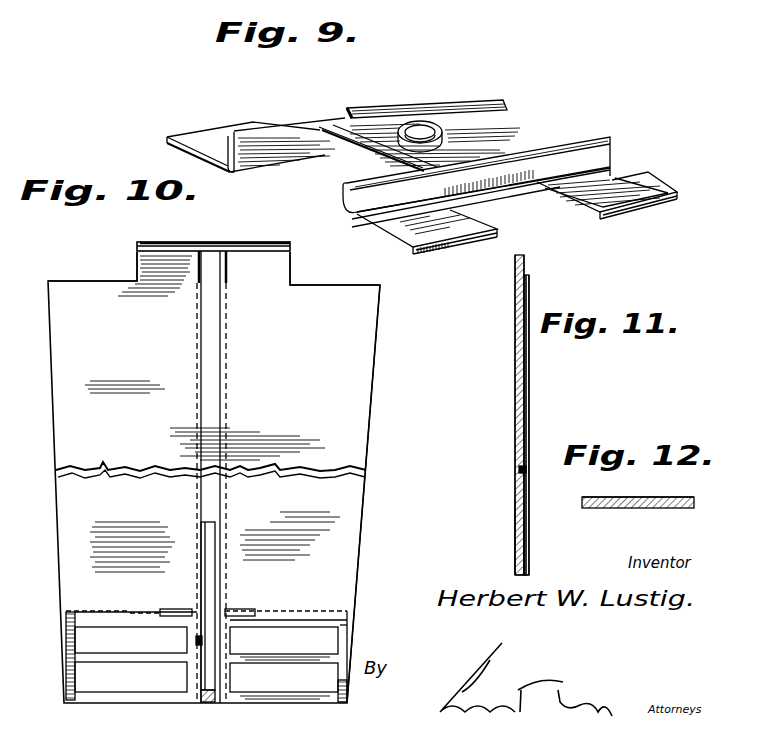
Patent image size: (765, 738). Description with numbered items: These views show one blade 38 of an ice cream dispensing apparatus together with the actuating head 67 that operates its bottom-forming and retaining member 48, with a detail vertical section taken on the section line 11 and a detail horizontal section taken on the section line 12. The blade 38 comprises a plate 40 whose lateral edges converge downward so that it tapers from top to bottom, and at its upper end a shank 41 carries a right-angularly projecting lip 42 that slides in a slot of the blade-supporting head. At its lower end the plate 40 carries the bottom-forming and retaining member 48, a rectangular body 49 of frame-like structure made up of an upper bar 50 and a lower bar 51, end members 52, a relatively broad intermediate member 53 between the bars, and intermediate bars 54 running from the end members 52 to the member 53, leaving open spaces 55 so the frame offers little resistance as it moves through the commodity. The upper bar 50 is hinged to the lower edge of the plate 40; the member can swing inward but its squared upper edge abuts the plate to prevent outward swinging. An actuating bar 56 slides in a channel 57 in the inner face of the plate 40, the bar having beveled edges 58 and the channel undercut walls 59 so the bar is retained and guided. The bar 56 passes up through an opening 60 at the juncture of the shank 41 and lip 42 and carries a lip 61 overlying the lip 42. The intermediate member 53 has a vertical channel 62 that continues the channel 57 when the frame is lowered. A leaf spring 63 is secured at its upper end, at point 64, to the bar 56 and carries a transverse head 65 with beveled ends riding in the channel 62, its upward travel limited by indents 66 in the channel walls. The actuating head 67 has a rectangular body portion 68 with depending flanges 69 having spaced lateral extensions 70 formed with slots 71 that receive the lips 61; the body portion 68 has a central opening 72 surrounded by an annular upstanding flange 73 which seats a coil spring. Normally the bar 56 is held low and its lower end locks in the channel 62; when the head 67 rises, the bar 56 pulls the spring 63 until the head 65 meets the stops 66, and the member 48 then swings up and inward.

In FIG. 10, the section line 11 is at (212, 501).
In FIG. 10, the section line 12 is at (185, 355).
In FIG. 10, the blade 38 is at (352, 391).
In FIG. 11, the blade 38 is at (514, 317).
In FIG. 10, the plate 40 is at (343, 443).
In FIG. 11, the plate 40 is at (513, 372).
In FIG. 10, the shank 41 is at (275, 268).
In FIG. 10, the lip 42 is at (272, 242).
In FIG. 10, the bottom-forming and retaining member 48 is at (345, 650).
In FIG. 10, the rectangular body 49 is at (348, 628).
In FIG. 10, the upper bar 50 is at (300, 622).
In FIG. 10, the lower bar 51 is at (298, 700).
In FIG. 10, the end member 52 is at (345, 682).
In FIG. 10, the intermediate member 53 is at (222, 645).
In FIG. 11, the intermediate member 53 is at (514, 512).
In FIG. 10, the intermediate bar 54 is at (290, 660).
In FIG. 10, the open space 55 is at (87, 640).
In FIG. 10, the actuating bar 56 is at (211, 343).
In FIG. 11, the actuating bar 56 is at (530, 355).
In FIG. 12, the actuating bar 56 is at (645, 510).
In FIG. 10, the channel 57 is at (222, 414).
In FIG. 11, the channel 57 is at (527, 445).
In FIG. 12, the channel 57 is at (640, 498).
In FIG. 12, the beveled edges 58 is at (668, 508).
In FIG. 12, the undercut walls 59 is at (617, 510).
In FIG. 10, the opening 60 is at (235, 252).
In FIG. 10, the lip 61 is at (180, 242).
In FIG. 10, the channel 62 is at (211, 698).
In FIG. 11, the channel 62 is at (528, 563).
In FIG. 10, the leaf spring 63 is at (217, 589).
In FIG. 11, the leaf spring 63 is at (530, 393).
In FIG. 10, the securing point 64 is at (218, 531).
In FIG. 10, the head 65 is at (224, 681).
In FIG. 11, the head 65 is at (528, 531).
In FIG. 10, the indents 66 is at (197, 641).
In FIG. 11, the indents 66 is at (526, 469).
In FIG. 9, the actuating head 67 is at (485, 149).
In FIG. 9, the body portion 68 is at (380, 122).
In FIG. 9, the depending flange 69 is at (580, 158).
In FIG. 9, the lateral extension 70 is at (647, 204).
In FIG. 9, the slot 71 is at (616, 214).
In FIG. 9, the opening 72 is at (430, 128).
In FIG. 9, the annular upstanding flange 73 is at (415, 150).